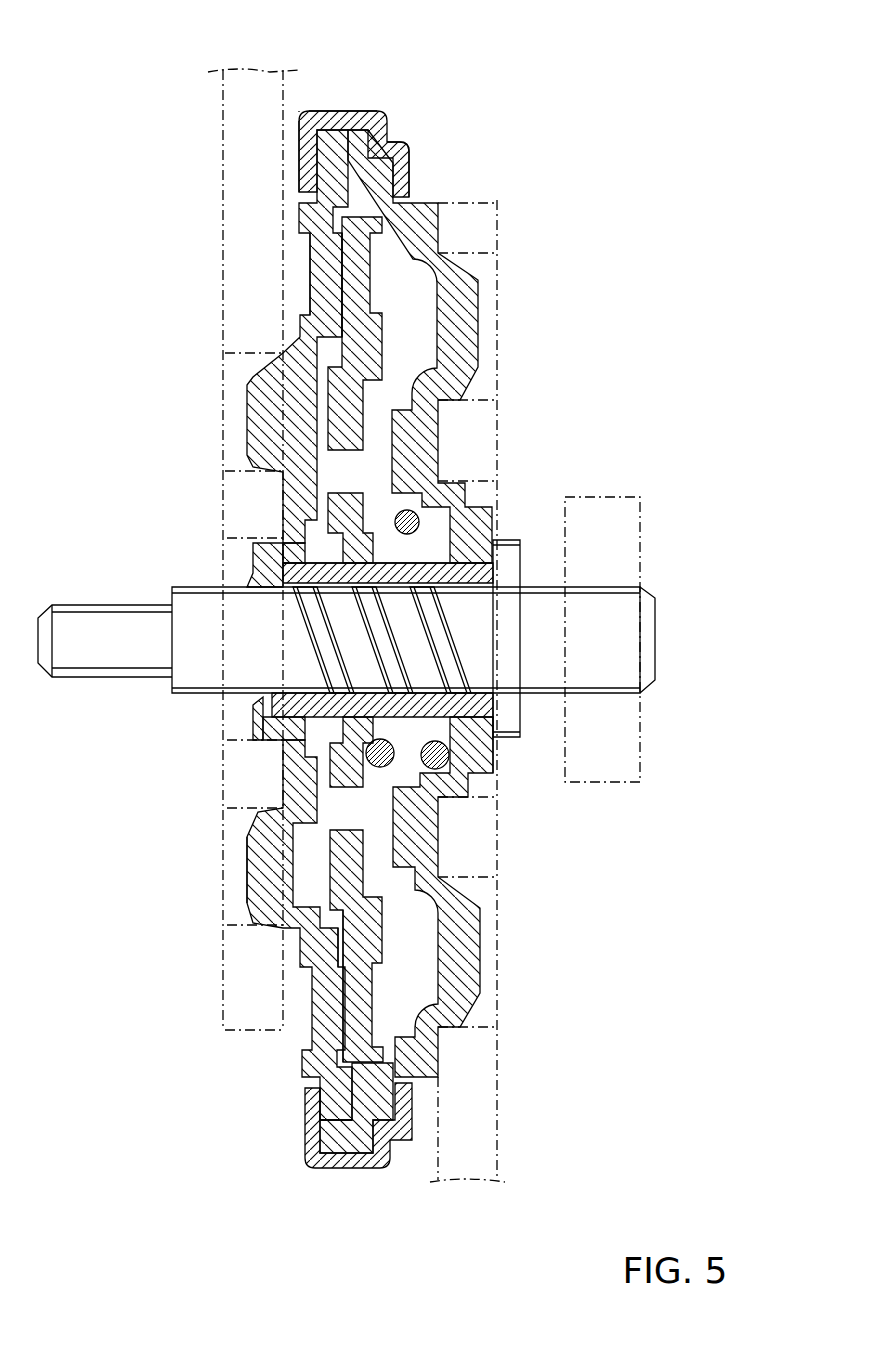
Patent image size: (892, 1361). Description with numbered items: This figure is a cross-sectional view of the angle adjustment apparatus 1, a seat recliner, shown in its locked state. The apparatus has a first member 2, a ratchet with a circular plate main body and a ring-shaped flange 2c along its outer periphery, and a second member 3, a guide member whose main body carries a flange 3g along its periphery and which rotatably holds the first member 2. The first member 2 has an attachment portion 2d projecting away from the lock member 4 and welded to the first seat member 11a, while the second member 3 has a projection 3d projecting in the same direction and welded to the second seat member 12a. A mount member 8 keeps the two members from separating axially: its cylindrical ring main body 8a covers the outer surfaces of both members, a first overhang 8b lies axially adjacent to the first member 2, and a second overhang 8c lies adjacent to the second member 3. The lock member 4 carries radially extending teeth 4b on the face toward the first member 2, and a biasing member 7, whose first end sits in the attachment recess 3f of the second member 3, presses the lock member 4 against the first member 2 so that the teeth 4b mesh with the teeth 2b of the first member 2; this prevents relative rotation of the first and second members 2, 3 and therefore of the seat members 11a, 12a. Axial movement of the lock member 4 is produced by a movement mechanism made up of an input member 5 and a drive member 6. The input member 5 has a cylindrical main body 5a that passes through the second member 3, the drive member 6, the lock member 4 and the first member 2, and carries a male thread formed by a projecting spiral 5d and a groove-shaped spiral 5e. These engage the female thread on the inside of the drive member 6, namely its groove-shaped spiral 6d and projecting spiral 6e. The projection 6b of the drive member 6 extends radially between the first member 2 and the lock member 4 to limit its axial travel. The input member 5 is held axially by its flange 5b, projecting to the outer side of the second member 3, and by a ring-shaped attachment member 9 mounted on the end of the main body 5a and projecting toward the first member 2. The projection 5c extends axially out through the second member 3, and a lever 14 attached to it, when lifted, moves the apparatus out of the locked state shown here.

The angle adjustment apparatus 1 is at (460, 82).
The first member 2 is at (310, 263).
The teeth 2b is at (312, 298).
The flange 2c is at (335, 1100).
The attachment portion 2d is at (250, 855).
The second member 3 is at (480, 317).
The projection 3d is at (465, 950).
The attachment recess 3f is at (503, 722).
The flange 3g is at (343, 1172).
The lock member 4 is at (371, 273).
The teeth 4b is at (342, 647).
The input member 5 is at (78, 604).
The main body 5a is at (472, 622).
The flange 5b is at (507, 567).
The projection 5c is at (640, 637).
The projecting spiral 5d is at (315, 615).
The groove-shaped spiral 5e is at (358, 648).
The drive member 6 is at (403, 560).
The projection 6b is at (280, 738).
The groove-shaped spiral 6d is at (255, 560).
The projecting spiral 6e is at (300, 553).
The biasing member 7 is at (437, 753).
The mount member 8 is at (379, 108).
The ring main body 8a is at (336, 112).
The first overhang 8b is at (310, 165).
The second overhang 8c is at (400, 178).
The attachment member 9 is at (252, 720).
The first seat member 11a is at (255, 965).
The second seat member 12a is at (503, 1115).
The lever 14 is at (597, 497).